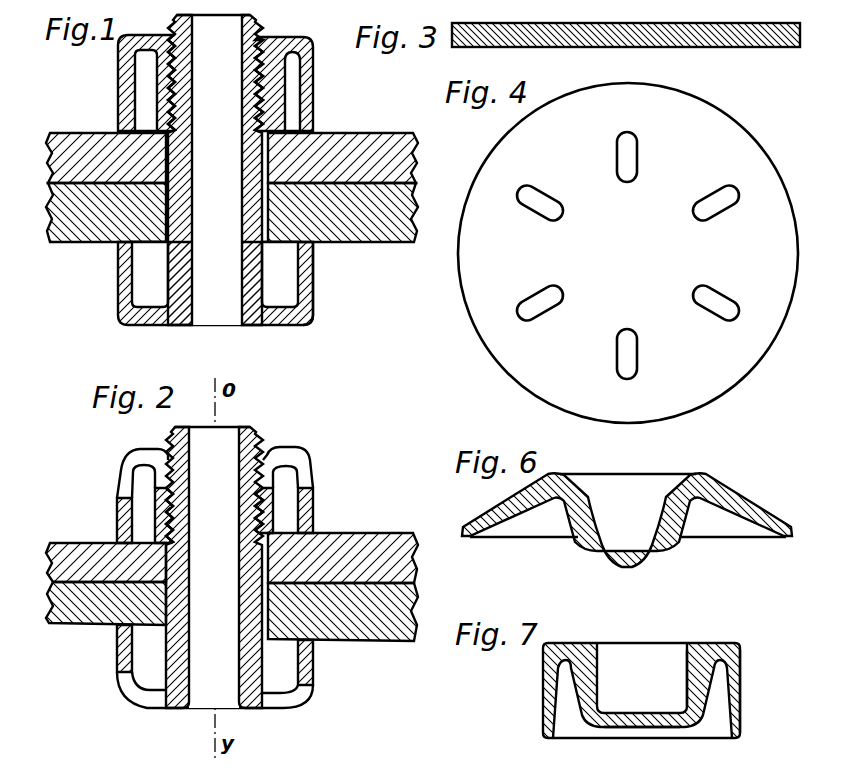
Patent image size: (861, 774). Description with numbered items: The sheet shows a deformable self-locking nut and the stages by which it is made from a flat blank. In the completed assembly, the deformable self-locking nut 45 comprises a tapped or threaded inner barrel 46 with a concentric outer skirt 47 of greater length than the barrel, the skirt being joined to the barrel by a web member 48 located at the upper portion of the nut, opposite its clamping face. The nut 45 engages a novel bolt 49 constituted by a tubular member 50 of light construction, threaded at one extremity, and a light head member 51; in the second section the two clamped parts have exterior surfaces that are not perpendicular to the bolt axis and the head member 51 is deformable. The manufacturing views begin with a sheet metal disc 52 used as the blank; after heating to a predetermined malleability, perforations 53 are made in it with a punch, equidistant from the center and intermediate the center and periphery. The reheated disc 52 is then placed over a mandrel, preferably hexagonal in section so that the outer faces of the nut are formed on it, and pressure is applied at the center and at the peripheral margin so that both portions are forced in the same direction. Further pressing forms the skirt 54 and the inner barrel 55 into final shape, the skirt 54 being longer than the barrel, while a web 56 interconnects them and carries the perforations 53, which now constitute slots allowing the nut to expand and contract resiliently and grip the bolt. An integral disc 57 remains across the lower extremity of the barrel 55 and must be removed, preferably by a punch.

In FIG. 1, the deformable self-locking nut 45 is at (312, 41).
In FIG. 1, the barrel 46 is at (142, 97).
In FIG. 1, the outer skirt 47 is at (118, 78).
In FIG. 1, the web member 48 is at (291, 54).
In FIG. 1, the bolt 49 is at (313, 325).
In FIG. 1, the tubular member 50 is at (268, 270).
In FIG. 1, the head member 51 is at (306, 298).
In FIG. 4, the sheet metal disc 52 is at (735, 148).
In FIG. 4, the perforations 53 is at (518, 308).
In FIG. 7, the skirt 54 is at (740, 683).
In FIG. 7, the inner barrel 55 is at (700, 697).
In FIG. 7, the web 56 is at (716, 643).
In FIG. 7, the integral disc 57 is at (667, 727).